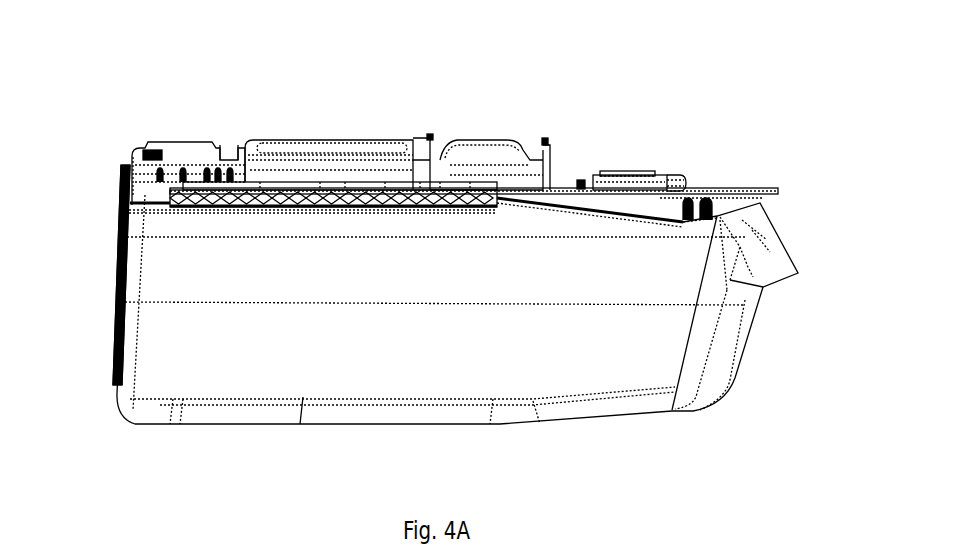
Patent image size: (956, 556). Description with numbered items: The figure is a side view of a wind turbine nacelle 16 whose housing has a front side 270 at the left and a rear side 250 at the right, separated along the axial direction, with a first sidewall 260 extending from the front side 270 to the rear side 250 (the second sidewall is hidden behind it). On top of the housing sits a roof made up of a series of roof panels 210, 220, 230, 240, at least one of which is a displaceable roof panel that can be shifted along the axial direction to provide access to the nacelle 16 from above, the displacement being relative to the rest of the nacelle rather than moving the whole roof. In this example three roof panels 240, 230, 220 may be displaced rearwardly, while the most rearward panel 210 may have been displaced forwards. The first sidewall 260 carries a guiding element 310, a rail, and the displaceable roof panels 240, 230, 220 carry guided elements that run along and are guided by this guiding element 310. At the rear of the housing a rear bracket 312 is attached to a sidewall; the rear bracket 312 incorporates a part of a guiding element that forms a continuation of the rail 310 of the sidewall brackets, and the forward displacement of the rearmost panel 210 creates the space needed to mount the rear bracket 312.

The wind turbine nacelle 16 is at (113, 88).
The roof panel 210 is at (642, 168).
The roof panel 220 is at (483, 140).
The roof panel 230 is at (350, 140).
The roof panel 240 is at (170, 138).
The rear side 250 is at (777, 252).
The first sidewall 260 is at (517, 378).
The front side 270 is at (117, 263).
The guiding element 310 is at (272, 168).
The rear bracket 312 is at (745, 187).